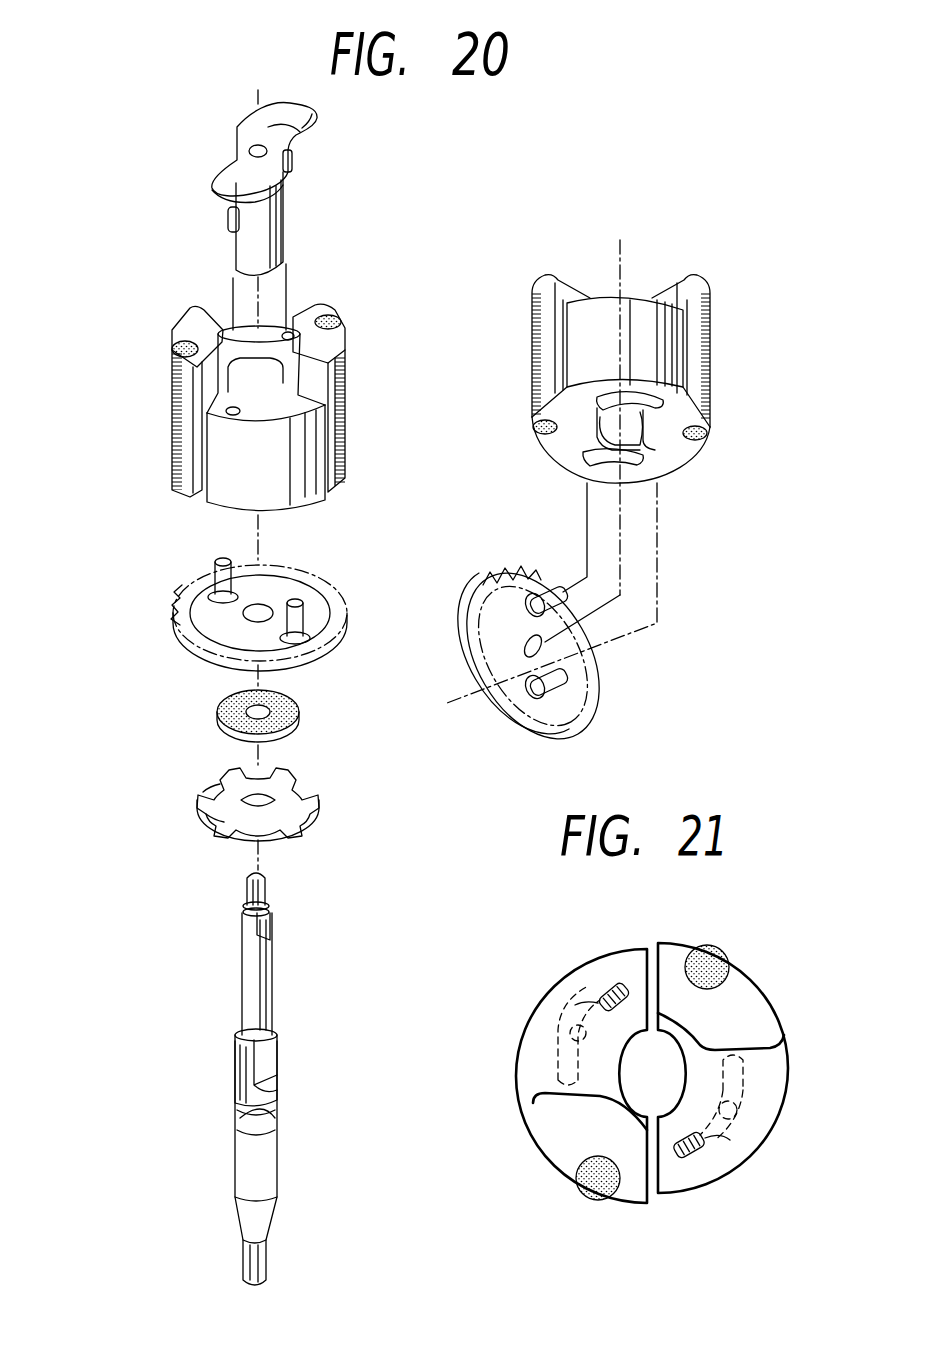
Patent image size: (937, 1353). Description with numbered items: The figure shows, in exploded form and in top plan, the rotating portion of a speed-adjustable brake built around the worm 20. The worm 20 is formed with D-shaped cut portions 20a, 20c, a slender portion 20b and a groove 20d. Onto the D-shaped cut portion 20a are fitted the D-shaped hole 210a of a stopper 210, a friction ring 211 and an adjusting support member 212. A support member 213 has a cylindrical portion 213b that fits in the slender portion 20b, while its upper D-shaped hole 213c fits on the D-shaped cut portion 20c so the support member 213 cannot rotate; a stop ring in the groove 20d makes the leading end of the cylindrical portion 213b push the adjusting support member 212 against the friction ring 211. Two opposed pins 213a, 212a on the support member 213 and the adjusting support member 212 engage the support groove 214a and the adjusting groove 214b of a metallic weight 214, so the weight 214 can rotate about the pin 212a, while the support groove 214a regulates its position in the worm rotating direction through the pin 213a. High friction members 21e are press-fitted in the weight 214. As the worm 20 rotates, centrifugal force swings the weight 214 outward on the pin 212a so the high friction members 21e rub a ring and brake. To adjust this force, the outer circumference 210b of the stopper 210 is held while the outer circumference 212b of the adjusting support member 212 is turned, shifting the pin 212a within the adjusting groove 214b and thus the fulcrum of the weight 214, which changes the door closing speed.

In FIG. 20, the worm 20 is at (245, 1082).
In FIG. 20, the D-shaped cut portion 20a is at (268, 1055).
In FIG. 20, the slender portion 20b is at (250, 965).
In FIG. 20, the D-shaped cut portion 20c is at (265, 922).
In FIG. 20, the groove 20d is at (247, 907).
In FIG. 20, the stopper 210 is at (277, 832).
In FIG. 20, the D-shaped hole 210a is at (198, 817).
In FIG. 20, the outer circumference 210b is at (200, 777).
In FIG. 20, the friction ring 211 is at (232, 712).
In FIG. 20, the adjusting support member 212 is at (212, 612).
In FIG. 20, the pin 212a is at (223, 556).
In FIG. 21, the pin 212a is at (570, 1027).
In FIG. 20, the outer circumference 212b is at (178, 610).
In FIG. 20, the support member 213 is at (230, 177).
In FIG. 20, the pin 213a is at (288, 158).
In FIG. 21, the pin 213a is at (623, 990).
In FIG. 20, the cylindrical portion 213b is at (268, 227).
In FIG. 20, the D-shaped hole 213c is at (305, 125).
In FIG. 20, the metallic weight 214 is at (188, 323).
In FIG. 21, the metallic weight 214 is at (537, 1063).
In FIG. 20, the support groove 214a is at (290, 333).
In FIG. 21, the support groove 214a is at (613, 987).
In FIG. 20, the adjusting groove 214b is at (645, 398).
In FIG. 21, the adjusting groove 214b is at (560, 1050).
In FIG. 20, the high friction member 21e is at (335, 320).
In FIG. 21, the high friction member 21e is at (707, 963).